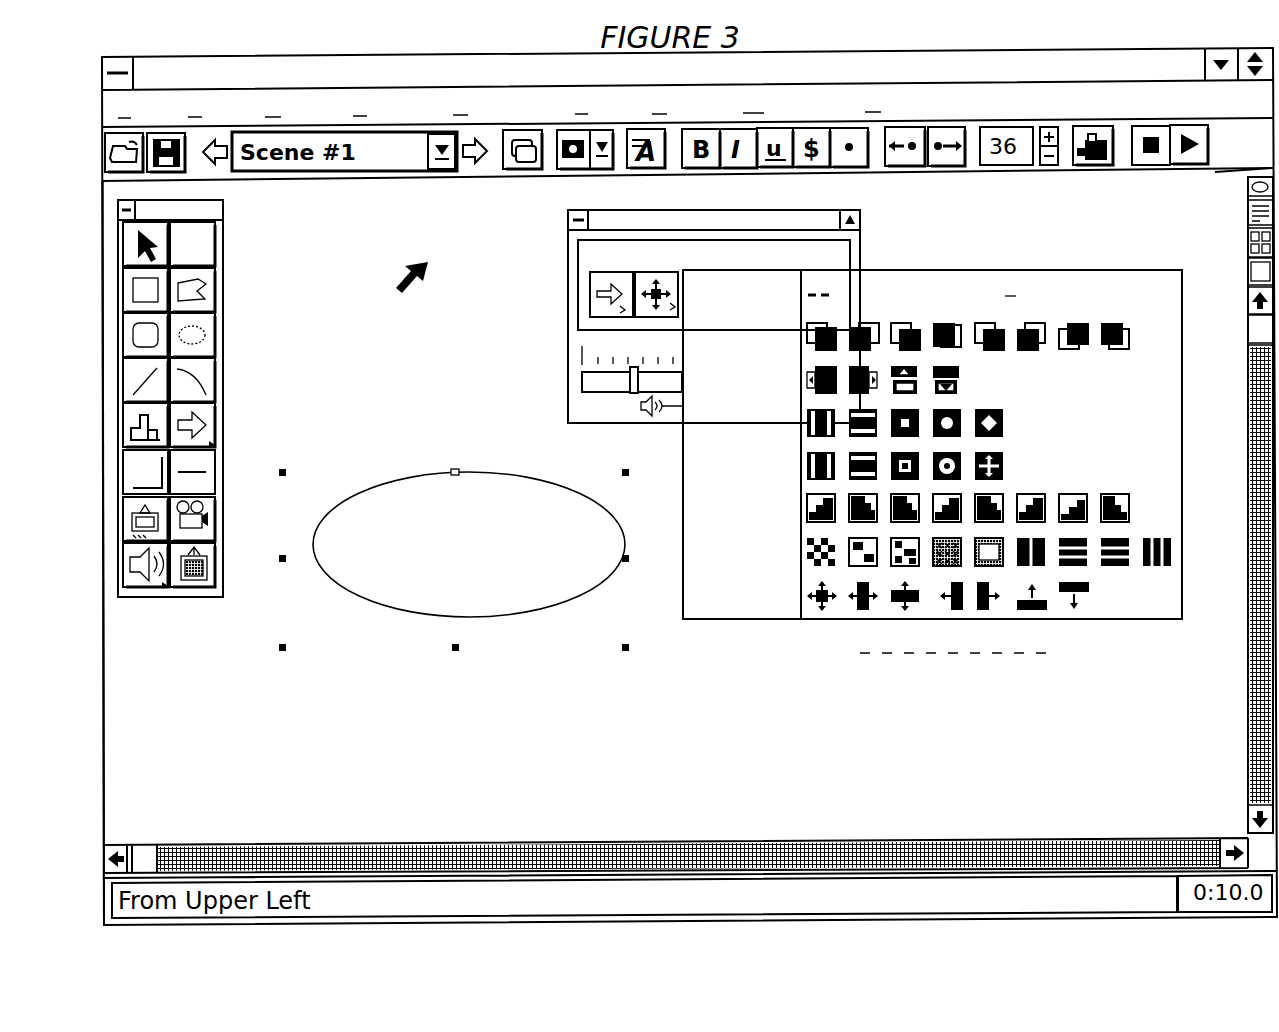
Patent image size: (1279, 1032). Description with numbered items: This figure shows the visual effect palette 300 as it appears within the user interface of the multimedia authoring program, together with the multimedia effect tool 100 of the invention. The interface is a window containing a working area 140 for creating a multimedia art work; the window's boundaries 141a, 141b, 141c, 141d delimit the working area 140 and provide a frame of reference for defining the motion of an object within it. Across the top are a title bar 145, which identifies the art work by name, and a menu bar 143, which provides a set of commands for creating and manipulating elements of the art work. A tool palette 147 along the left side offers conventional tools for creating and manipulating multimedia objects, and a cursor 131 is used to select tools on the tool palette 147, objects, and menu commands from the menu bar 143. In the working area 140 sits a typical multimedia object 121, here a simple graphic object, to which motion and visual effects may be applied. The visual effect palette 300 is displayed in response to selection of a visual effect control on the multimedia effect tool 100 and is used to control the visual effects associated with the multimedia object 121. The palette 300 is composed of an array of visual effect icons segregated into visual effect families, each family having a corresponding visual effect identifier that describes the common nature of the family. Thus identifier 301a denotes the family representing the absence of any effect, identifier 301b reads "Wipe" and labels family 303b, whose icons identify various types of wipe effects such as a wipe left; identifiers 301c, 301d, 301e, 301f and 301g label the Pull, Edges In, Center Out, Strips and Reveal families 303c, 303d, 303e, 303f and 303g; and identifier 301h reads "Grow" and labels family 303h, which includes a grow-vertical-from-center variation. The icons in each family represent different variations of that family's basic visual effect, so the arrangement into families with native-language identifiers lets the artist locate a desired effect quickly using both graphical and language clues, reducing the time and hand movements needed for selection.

The multimedia effect tool 100 is at (568, 312).
The multimedia object 121 is at (486, 503).
The cursor 131 is at (394, 281).
The working area 140 is at (453, 300).
The boundary 141a is at (104, 700).
The boundary 141b is at (670, 845).
The boundary 141c is at (1248, 680).
The boundary 141d is at (1212, 172).
The menu bar 143 is at (977, 111).
The title bar 145 is at (869, 81).
The tool palette 147 is at (223, 272).
The visual effect palette 300 is at (1124, 270).
The visual effect identifier 301a is at (758, 301).
The visual effect identifier 301b is at (758, 343).
The visual effect identifier 301c is at (760, 378).
The visual effect identifier 301d is at (758, 420).
The visual effect identifier 301e is at (698, 468).
The visual effect identifier 301f is at (743, 511).
The visual effect identifier 301g is at (728, 548).
The visual effect identifier 301h is at (745, 594).
The visual effect family 303b is at (1011, 320).
The visual effect family 303c is at (967, 375).
The visual effect family 303d is at (1005, 425).
The visual effect family 303e is at (1005, 468).
The visual effect family 303f is at (1130, 500).
The visual effect family 303g is at (1172, 553).
The visual effect family 303h is at (983, 623).